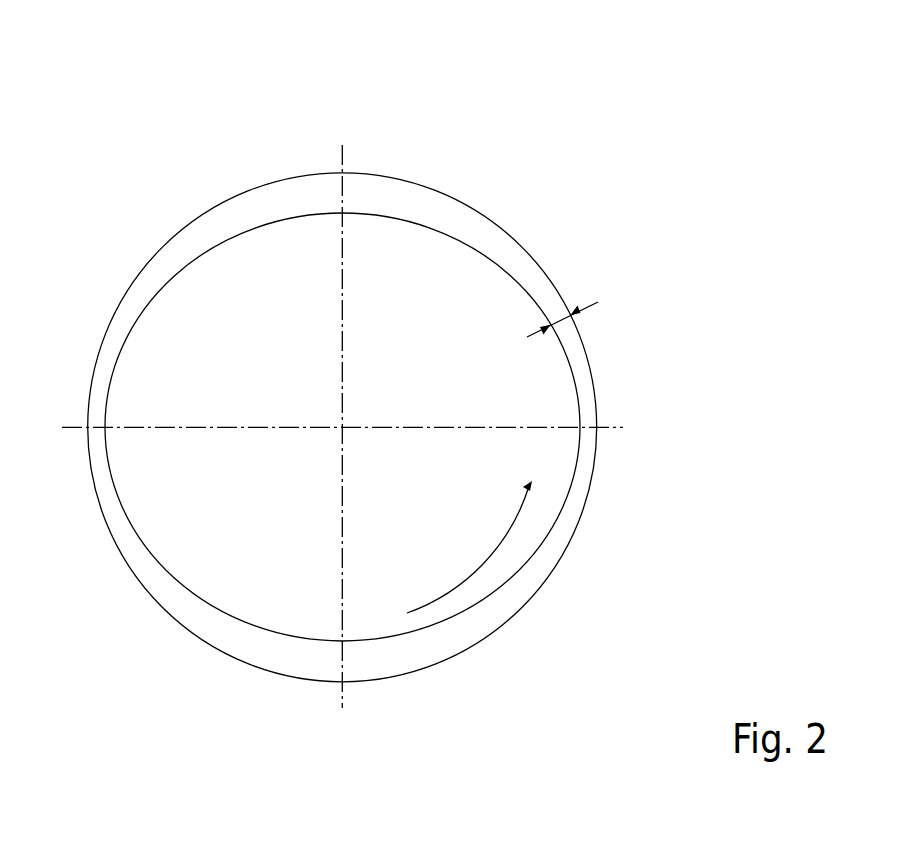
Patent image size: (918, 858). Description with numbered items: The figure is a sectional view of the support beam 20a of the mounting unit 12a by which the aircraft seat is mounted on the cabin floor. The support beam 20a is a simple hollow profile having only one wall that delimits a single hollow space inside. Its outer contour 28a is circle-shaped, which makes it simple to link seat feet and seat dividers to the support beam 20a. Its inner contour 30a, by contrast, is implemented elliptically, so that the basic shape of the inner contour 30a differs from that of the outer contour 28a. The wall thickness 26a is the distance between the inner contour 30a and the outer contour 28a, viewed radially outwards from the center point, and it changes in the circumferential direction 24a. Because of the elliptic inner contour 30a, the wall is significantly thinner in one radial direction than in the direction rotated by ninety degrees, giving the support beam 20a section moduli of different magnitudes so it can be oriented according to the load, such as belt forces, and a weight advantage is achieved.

The mounting unit 12a is at (390, 362).
The support beam 20a is at (390, 397).
The circumferential direction 24a is at (503, 543).
The wall thickness 26a is at (560, 300).
The outer contour 28a is at (597, 457).
The inner contour 30a is at (247, 623).